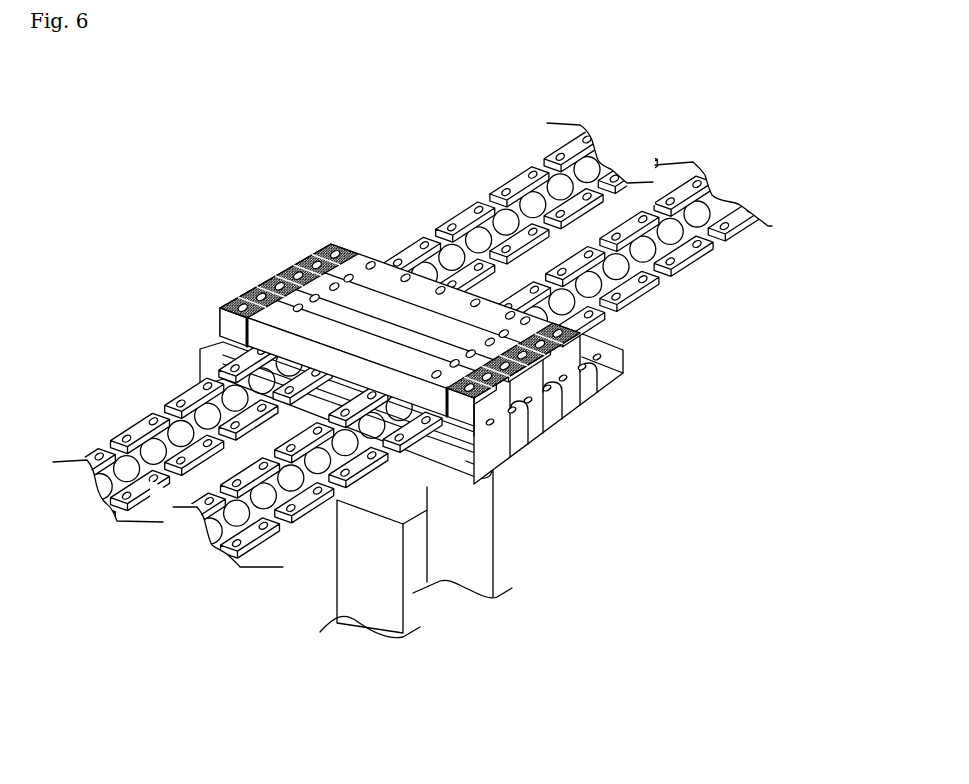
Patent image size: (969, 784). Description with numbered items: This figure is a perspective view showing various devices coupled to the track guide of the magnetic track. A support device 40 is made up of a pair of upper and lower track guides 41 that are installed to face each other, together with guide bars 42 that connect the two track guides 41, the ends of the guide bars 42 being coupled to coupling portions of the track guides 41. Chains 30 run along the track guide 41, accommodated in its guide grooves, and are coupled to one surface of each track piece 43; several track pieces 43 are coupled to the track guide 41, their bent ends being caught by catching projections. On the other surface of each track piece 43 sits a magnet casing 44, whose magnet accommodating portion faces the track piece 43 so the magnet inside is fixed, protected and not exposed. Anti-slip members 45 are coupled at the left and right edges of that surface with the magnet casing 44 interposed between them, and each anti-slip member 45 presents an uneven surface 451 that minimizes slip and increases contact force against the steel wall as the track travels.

The chain 30 is at (462, 193).
The support device 40 is at (349, 290).
The track guide 41 is at (430, 470).
The guide bar 42 is at (383, 600).
The track piece 43 is at (573, 400).
The magnet casing 44 is at (390, 280).
The anti-slip member 45 is at (228, 323).
The uneven surface 451 is at (250, 295).